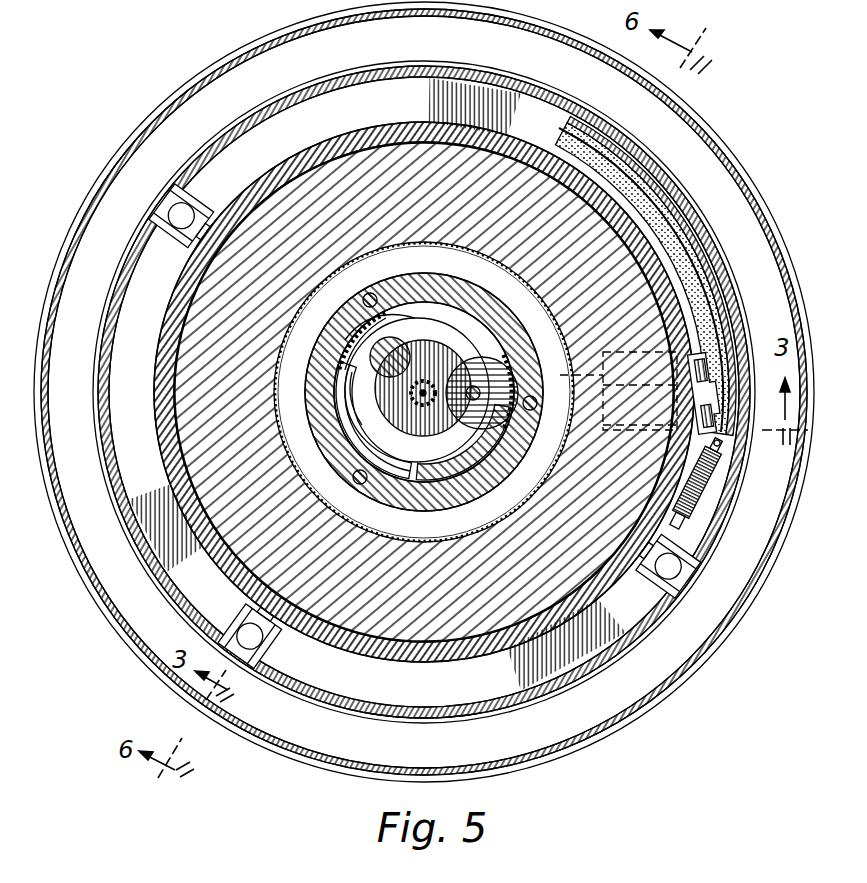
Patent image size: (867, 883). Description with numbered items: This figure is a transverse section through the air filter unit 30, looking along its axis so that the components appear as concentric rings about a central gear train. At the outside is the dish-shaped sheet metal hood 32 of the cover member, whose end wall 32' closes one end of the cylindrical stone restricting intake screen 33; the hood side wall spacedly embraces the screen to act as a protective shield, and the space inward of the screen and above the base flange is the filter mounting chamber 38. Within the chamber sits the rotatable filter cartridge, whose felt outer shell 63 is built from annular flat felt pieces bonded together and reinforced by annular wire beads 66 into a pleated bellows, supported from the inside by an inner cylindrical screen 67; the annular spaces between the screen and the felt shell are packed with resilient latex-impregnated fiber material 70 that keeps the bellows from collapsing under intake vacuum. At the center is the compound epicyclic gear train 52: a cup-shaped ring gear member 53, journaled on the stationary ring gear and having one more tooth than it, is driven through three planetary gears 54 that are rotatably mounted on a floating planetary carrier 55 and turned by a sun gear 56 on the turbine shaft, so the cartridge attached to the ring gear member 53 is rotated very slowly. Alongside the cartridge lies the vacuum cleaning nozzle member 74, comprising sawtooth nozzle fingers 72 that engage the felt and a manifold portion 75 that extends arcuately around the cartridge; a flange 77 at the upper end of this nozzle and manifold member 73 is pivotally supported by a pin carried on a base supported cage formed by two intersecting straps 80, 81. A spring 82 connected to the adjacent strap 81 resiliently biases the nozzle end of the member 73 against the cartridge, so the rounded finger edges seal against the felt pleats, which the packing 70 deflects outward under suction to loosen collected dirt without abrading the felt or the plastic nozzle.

The air filter unit 30 is at (190, 700).
The dish-shaped sheet metal cover or hood 32 is at (424, 392).
The end wall 32' is at (138, 131).
The stone restricting intake screen 33 is at (97, 345).
The filter mounting chamber 38 is at (385, 703).
The compound epicyclic gear train 52 is at (312, 340).
The cup-shaped ring gear member 53 is at (415, 504).
The planetary gears 54 is at (352, 366).
The floating planetary carrier 55 is at (445, 475).
The sun gear 56 is at (415, 402).
The outer shell 63 is at (318, 165).
The annular wire beads 66 is at (168, 419).
The inner cylindrical screen 67 is at (310, 462).
The resilient latex-impregnated fiber material 70 is at (517, 265).
The sawtooth nozzle fingers 72 is at (532, 380).
The nozzle and manifold member 73 is at (712, 267).
The nozzle member 74 is at (707, 350).
The manifold portion 75 is at (673, 203).
The flange 77 is at (536, 407).
The strap 80 is at (283, 632).
The strap 81 is at (205, 200).
The spring 82 is at (712, 488).